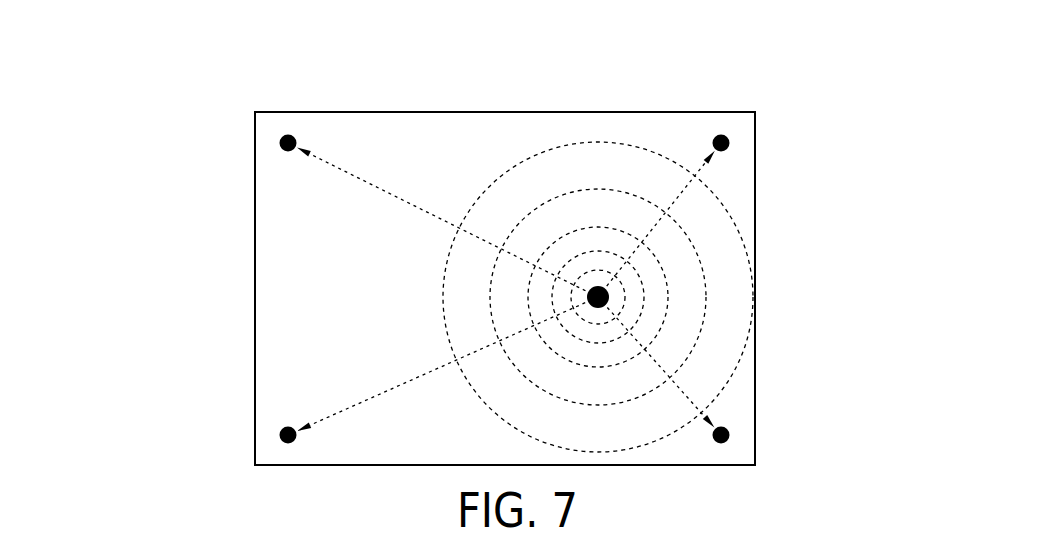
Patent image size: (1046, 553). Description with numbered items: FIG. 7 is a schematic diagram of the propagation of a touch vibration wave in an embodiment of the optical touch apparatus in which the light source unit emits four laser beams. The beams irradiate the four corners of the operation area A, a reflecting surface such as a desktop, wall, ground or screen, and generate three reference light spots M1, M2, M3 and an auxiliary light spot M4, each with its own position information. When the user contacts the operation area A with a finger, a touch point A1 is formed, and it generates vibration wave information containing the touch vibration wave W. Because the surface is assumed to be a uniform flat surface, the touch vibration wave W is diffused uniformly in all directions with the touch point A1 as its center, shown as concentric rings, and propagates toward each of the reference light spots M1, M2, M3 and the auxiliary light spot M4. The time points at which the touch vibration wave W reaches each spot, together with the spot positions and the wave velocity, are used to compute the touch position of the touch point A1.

The operation area A is at (755, 183).
The touch point A1 is at (609, 294).
The touch vibration wave W is at (733, 371).
The reference light spot M1 is at (290, 134).
The reference light spot M2 is at (722, 134).
The reference light spot M3 is at (729, 434).
The auxiliary light spot M4 is at (280, 435).